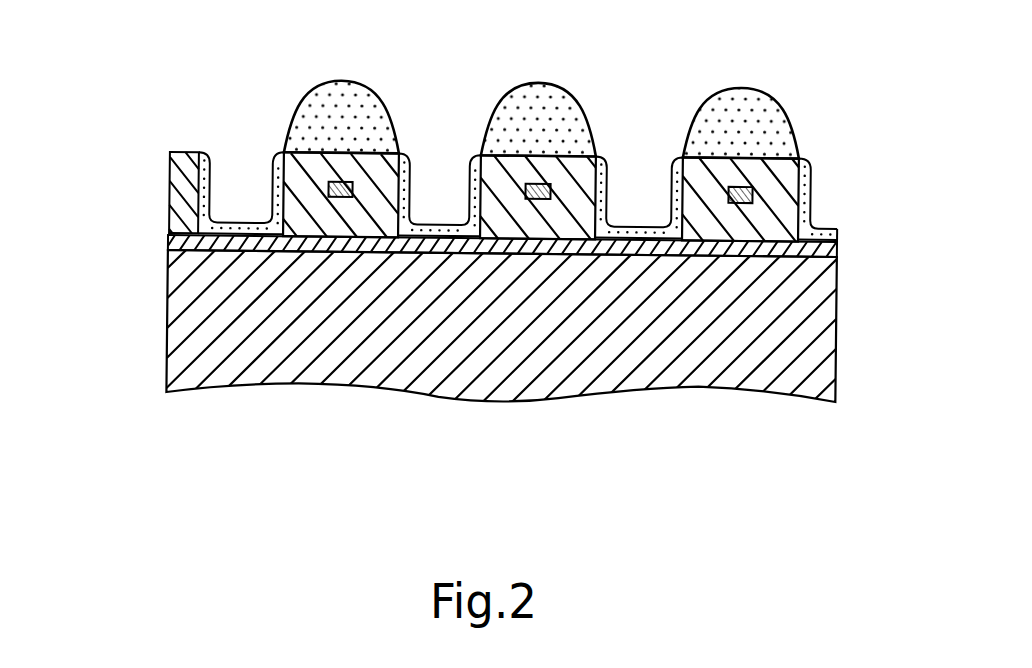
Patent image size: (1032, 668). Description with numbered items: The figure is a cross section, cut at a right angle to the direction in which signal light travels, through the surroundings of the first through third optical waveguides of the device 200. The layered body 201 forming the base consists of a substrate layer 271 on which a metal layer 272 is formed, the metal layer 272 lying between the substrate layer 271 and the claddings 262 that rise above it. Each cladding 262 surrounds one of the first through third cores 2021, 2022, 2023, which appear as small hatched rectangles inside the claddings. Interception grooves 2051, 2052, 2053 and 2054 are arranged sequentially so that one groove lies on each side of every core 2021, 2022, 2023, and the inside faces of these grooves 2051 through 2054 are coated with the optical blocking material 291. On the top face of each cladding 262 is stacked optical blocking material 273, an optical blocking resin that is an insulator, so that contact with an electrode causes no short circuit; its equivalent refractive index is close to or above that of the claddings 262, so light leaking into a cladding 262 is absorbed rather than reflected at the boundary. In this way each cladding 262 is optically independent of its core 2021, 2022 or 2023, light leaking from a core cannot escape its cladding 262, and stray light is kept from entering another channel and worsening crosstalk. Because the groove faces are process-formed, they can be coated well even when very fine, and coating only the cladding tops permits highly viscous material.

The semiconductor device structure 200 is at (176, 128).
The substrate assembly 201 is at (107, 150).
The substrate layer 271 is at (180, 324).
The metal layer 272 is at (170, 240).
The claddings 262 is at (309, 222).
The optical blocking material 273 is at (340, 90).
The optical blocking material 291 is at (812, 206).
The first core 2021 is at (345, 198).
The second core 2022 is at (540, 200).
The third core 2023 is at (740, 204).
The interception groove 2051 is at (240, 164).
The interception groove 2052 is at (434, 164).
The interception groove 2053 is at (638, 164).
The interception groove 2054 is at (824, 172).